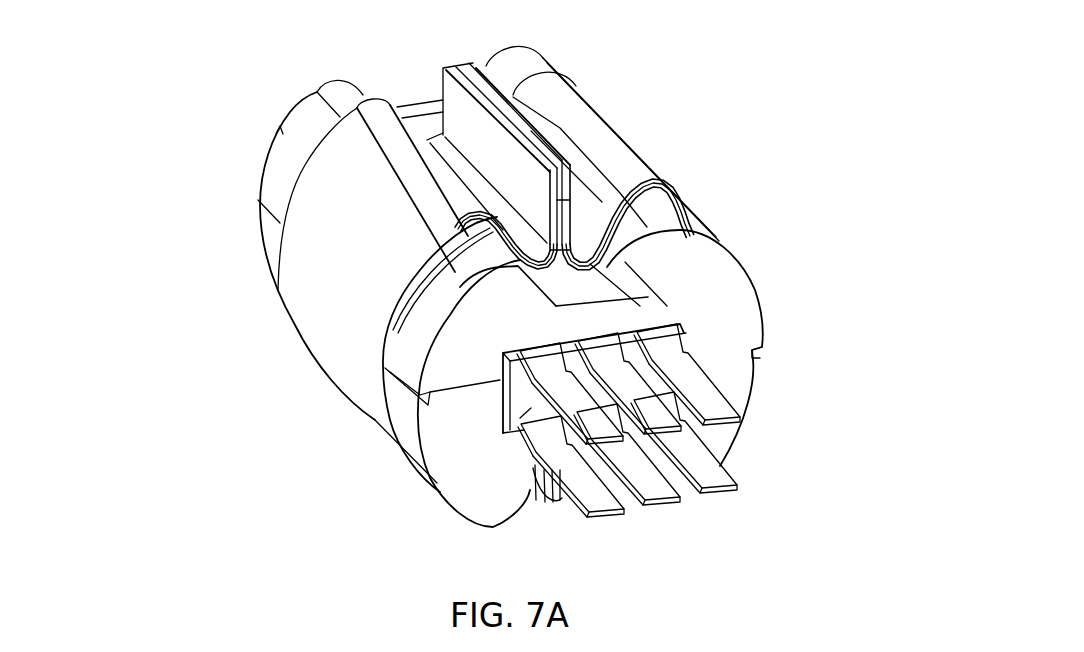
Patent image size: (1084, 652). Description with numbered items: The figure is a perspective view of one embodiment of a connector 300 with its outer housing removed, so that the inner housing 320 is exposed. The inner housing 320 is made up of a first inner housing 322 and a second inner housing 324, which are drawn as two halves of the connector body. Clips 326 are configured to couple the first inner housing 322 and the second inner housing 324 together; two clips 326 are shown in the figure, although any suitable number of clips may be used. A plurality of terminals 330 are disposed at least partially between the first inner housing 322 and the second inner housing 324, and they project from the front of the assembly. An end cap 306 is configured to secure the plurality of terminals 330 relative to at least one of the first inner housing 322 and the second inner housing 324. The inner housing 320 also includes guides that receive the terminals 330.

The connector 300 is at (817, 30).
The end cap 306 is at (527, 413).
The inner housing 320 is at (799, 355).
The first inner housing 322 is at (460, 366).
The second inner housing 324 is at (443, 439).
The clips 326 is at (595, 110).
The terminals 330 is at (733, 468).